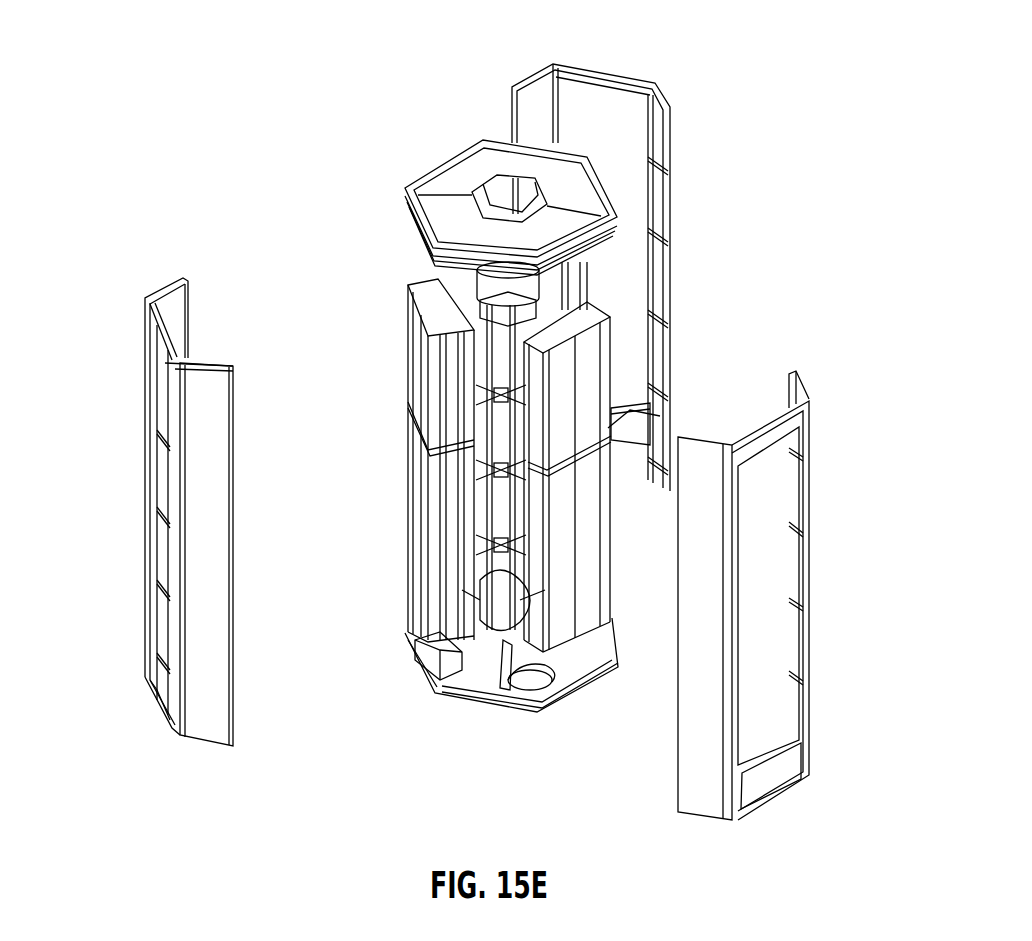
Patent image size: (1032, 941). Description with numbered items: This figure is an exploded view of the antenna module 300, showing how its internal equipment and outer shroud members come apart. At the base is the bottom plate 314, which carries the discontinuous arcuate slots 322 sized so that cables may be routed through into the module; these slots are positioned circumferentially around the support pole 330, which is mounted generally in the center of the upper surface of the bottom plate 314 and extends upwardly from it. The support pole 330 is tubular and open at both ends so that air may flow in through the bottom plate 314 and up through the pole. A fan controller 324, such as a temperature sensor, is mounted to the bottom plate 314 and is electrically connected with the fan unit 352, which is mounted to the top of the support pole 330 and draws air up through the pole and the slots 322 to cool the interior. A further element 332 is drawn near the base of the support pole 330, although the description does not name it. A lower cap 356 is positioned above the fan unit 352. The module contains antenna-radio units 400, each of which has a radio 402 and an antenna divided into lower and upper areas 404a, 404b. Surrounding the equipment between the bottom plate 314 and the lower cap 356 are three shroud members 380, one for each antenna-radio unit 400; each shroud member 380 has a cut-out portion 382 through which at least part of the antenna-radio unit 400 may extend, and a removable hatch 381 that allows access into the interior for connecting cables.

The antenna module 300 is at (256, 53).
The shroud member 380 is at (706, 81).
The cut-out portion 382 is at (624, 112).
The removable hatch 381 is at (157, 682).
The lower cap 356 is at (470, 162).
The fan unit 352 is at (430, 245).
The antenna-radio unit 400 is at (346, 298).
The lower area of antenna 404a is at (435, 352).
The upper area of antenna 404b is at (433, 527).
The radio 402 is at (475, 380).
The bottom plate 314 is at (563, 682).
The fan controller 324 is at (433, 693).
The support pole 330 is at (500, 610).
The fin 332 is at (518, 645).
The discontinuous arcuate slots 322 is at (511, 691).